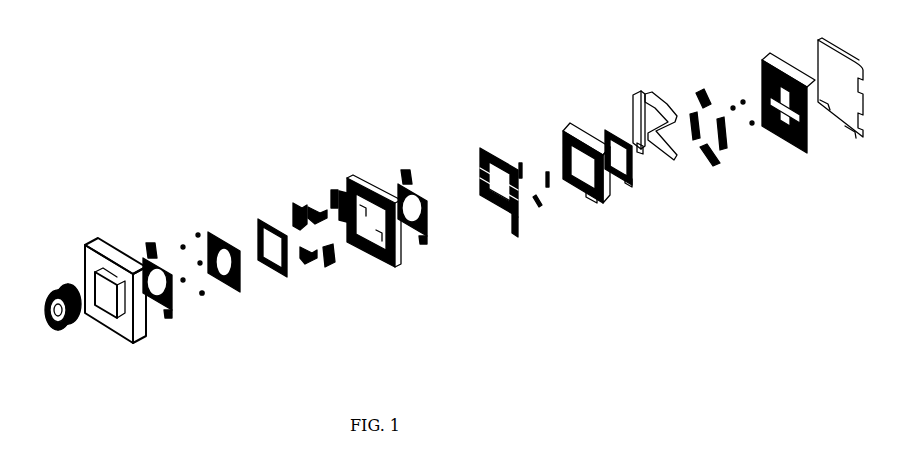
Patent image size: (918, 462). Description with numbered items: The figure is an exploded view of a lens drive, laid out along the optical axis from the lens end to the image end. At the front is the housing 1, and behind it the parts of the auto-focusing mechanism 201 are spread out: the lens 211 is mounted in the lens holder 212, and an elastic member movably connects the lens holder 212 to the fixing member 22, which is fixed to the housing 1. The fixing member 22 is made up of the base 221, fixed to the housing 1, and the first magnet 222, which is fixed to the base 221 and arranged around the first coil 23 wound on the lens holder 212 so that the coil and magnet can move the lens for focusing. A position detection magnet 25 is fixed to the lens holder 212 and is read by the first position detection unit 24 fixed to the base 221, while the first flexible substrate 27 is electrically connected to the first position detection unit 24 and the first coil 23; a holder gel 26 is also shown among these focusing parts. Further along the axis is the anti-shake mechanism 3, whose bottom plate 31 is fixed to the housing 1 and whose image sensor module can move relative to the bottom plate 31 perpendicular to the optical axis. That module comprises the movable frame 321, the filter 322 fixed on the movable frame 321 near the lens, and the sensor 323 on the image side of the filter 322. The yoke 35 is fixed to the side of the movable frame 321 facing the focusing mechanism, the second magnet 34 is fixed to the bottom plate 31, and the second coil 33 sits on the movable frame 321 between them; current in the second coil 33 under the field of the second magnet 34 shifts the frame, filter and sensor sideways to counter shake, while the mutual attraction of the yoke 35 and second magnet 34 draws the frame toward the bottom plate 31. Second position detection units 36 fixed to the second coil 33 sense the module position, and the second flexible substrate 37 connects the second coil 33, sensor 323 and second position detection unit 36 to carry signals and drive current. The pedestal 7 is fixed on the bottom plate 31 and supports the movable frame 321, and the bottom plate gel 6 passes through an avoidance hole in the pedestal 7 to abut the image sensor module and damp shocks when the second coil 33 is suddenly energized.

The housing 1 is at (97, 248).
The anti-shake mechanism 3 is at (813, 25).
The bottom plate gel 6 is at (744, 134).
The pedestal 7 is at (765, 55).
The fixing member 22 is at (421, 291).
The first coil 23 is at (262, 217).
The first position detection unit 24 is at (344, 190).
The position detection magnet 25 is at (198, 233).
The holder gel 26 is at (204, 294).
The first flexible substrate 27 is at (333, 193).
The bottom plate 31 is at (823, 47).
The second coil 33 is at (572, 130).
The second magnet 34 is at (707, 97).
The yoke 35 is at (530, 148).
The second position detection unit 36 is at (597, 196).
The second flexible substrate 37 is at (655, 98).
The auto-focusing mechanism 201 is at (405, 155).
The lens 211 is at (69, 290).
The lens holder 212 is at (234, 290).
The base 221 is at (375, 258).
The first magnet 222 is at (331, 265).
The movable frame 321 is at (517, 238).
The filter 322 is at (602, 127).
The sensor 323 is at (632, 180).